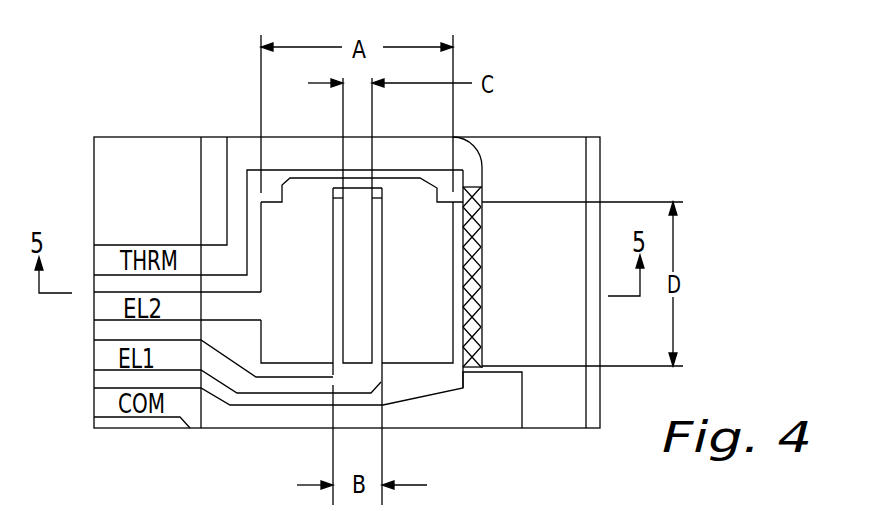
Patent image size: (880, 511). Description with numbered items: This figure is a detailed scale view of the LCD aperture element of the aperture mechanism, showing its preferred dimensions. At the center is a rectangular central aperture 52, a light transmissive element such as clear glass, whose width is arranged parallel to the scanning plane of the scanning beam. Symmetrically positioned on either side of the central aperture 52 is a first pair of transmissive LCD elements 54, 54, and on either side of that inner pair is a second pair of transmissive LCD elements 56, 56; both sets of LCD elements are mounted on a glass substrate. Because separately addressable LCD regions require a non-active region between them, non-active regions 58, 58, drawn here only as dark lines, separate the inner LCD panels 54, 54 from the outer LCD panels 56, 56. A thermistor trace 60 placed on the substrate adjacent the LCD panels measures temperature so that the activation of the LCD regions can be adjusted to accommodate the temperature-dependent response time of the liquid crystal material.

The central aperture 52 is at (369, 272).
The first pair of transmissive LCD elements 54 is at (338, 318).
The second pair of transmissive LCD elements 56 is at (307, 348).
The non-active regions 58 is at (333, 203).
The thermistor trace 60 is at (482, 242).